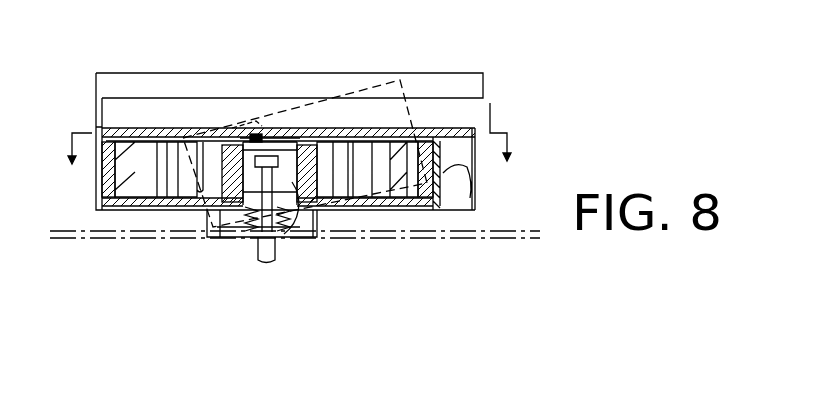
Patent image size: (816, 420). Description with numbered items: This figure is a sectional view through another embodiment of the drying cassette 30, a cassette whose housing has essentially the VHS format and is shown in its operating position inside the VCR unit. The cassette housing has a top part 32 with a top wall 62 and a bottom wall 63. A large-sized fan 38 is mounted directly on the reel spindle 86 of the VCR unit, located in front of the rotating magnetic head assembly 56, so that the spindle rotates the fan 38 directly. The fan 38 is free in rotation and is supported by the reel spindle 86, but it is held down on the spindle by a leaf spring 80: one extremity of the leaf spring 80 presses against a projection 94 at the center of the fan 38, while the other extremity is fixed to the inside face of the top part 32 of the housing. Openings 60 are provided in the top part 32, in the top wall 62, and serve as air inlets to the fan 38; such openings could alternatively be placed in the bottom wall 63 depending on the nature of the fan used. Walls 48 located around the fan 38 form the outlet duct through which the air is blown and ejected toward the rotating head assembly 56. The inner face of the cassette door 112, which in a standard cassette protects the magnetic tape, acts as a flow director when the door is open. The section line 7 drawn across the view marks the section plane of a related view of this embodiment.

The section line 7- 7 is at (289, 149).
The drying cassette 30 is at (498, 110).
The top part 32 is at (118, 128).
The fan 38 is at (415, 188).
The walls 48 is at (474, 204).
The rotating magnetic head assembly 56 is at (386, 74).
The openings 60 is at (183, 127).
The top wall 62 is at (158, 113).
The bottom wall 63 is at (147, 207).
The leaf spring 80 is at (290, 127).
The reel spindle 86 is at (279, 237).
The projection 94 is at (252, 123).
The door 112 is at (150, 82).